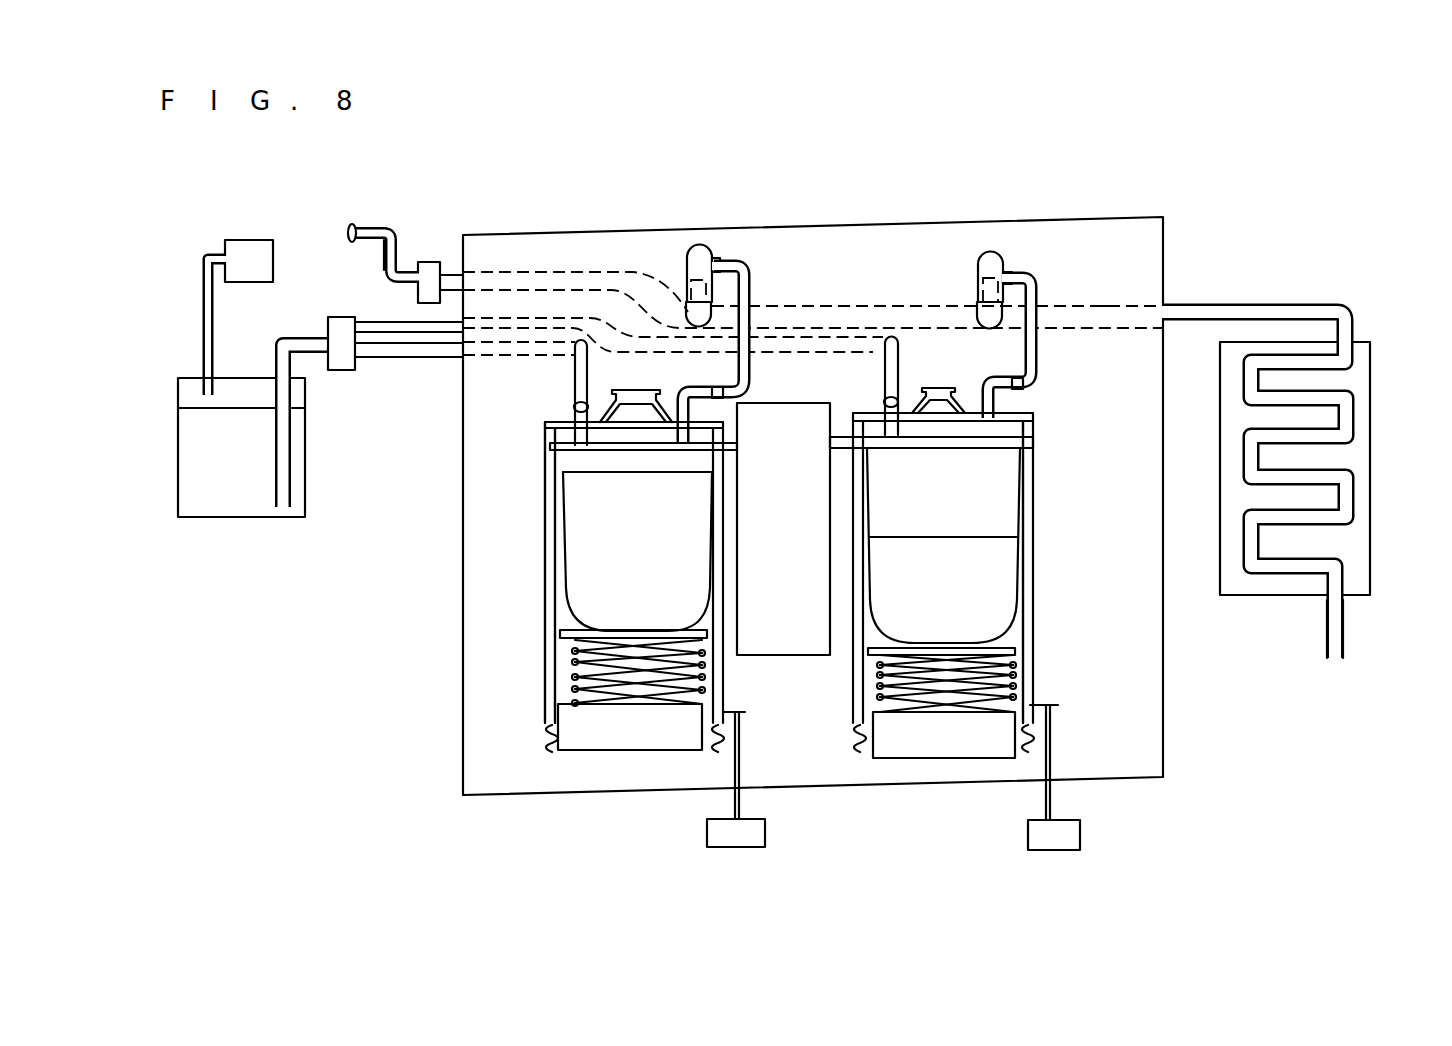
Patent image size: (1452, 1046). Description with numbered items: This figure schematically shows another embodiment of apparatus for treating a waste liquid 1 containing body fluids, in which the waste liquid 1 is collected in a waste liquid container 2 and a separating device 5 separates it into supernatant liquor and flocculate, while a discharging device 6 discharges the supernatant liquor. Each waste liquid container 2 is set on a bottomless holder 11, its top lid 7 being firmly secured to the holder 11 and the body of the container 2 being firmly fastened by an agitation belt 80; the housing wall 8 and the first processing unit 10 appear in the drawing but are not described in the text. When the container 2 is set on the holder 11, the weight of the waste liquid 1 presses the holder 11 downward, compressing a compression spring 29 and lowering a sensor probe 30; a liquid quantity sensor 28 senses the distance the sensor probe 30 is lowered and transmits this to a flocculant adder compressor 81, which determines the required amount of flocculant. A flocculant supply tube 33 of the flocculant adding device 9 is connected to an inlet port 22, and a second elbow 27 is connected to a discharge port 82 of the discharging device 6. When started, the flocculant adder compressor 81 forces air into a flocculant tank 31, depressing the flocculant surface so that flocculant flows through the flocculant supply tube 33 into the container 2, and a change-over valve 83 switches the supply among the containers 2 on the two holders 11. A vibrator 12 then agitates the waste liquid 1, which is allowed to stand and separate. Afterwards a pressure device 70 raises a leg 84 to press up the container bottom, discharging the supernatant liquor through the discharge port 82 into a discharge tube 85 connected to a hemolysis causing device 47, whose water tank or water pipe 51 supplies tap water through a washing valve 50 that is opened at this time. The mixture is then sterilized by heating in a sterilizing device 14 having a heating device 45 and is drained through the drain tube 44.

The waste liquid 1 is at (640, 566).
The waste liquid container 2 is at (575, 468).
The separating device 5 is at (868, 210).
The discharging device 6 is at (990, 765).
The top lid 7 is at (552, 422).
The housing wall 8 is at (562, 552).
The flocculant adding device 9 is at (288, 520).
The first processing unit 10 is at (582, 755).
The bottomless holder 11 is at (548, 606).
The vibrator 12 is at (795, 541).
The sterilizing device 14 is at (1357, 290).
The inlet port 22 is at (577, 407).
The second elbow 27 is at (693, 262).
The liquid quantity sensor 28 is at (737, 839).
The compression spring 29 is at (546, 738).
The sensor probe 30 is at (745, 732).
The flocculant tank 31 is at (185, 449).
The flocculant supply tube 33 is at (394, 332).
The drain tube 44 is at (1333, 658).
The heating device 45 is at (1370, 343).
The hemolysis causing device 47 is at (415, 228).
The washing valve 50 is at (433, 268).
The water tank or water pipe 51 is at (388, 228).
The pressure device 70 is at (633, 736).
The agitation belt 80 is at (560, 450).
The flocculant adder compressor 81 is at (253, 245).
The discharge port 82 is at (692, 316).
The change-over valve 83 is at (342, 362).
The leg 84 is at (576, 690).
The discharge tube 85 is at (1108, 306).